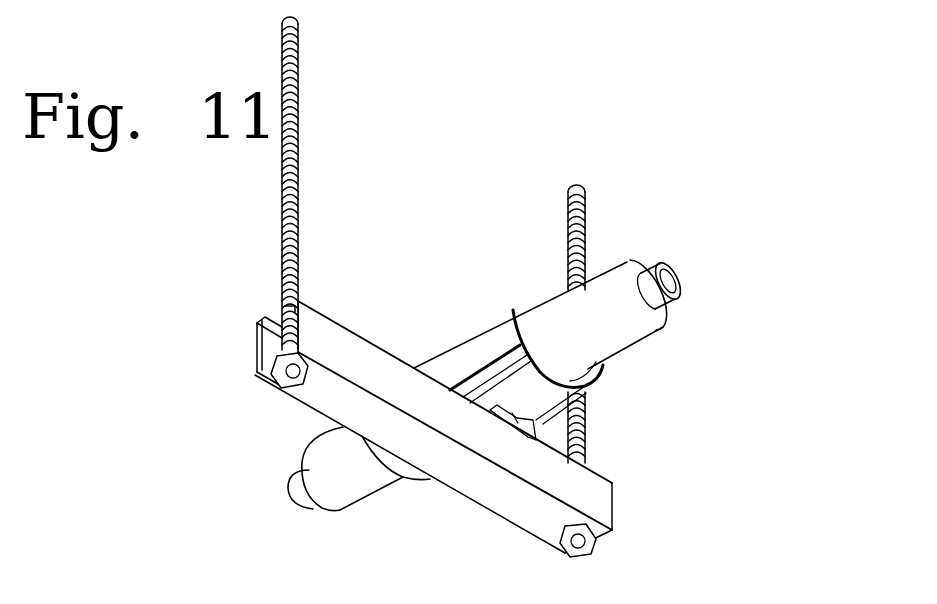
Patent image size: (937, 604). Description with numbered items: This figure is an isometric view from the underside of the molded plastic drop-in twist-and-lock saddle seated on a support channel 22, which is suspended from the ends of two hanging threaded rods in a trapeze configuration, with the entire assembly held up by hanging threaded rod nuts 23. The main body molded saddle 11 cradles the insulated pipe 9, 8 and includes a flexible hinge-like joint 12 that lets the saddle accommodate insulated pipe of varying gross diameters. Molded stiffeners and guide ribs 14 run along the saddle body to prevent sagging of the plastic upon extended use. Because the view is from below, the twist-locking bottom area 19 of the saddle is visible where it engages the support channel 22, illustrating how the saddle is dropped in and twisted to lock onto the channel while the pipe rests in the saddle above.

The insulated pipe 8 is at (684, 271).
The insulated pipe 9 is at (674, 324).
The main body molded saddle 11 is at (497, 312).
The flexible hinge-like joint 12 is at (482, 368).
The molded stiffeners and guide ribs 14 is at (585, 397).
The twist-locking bottom area 19 is at (518, 416).
The support channel 22 is at (253, 322).
The hanging threaded rod nuts 23 is at (267, 379).